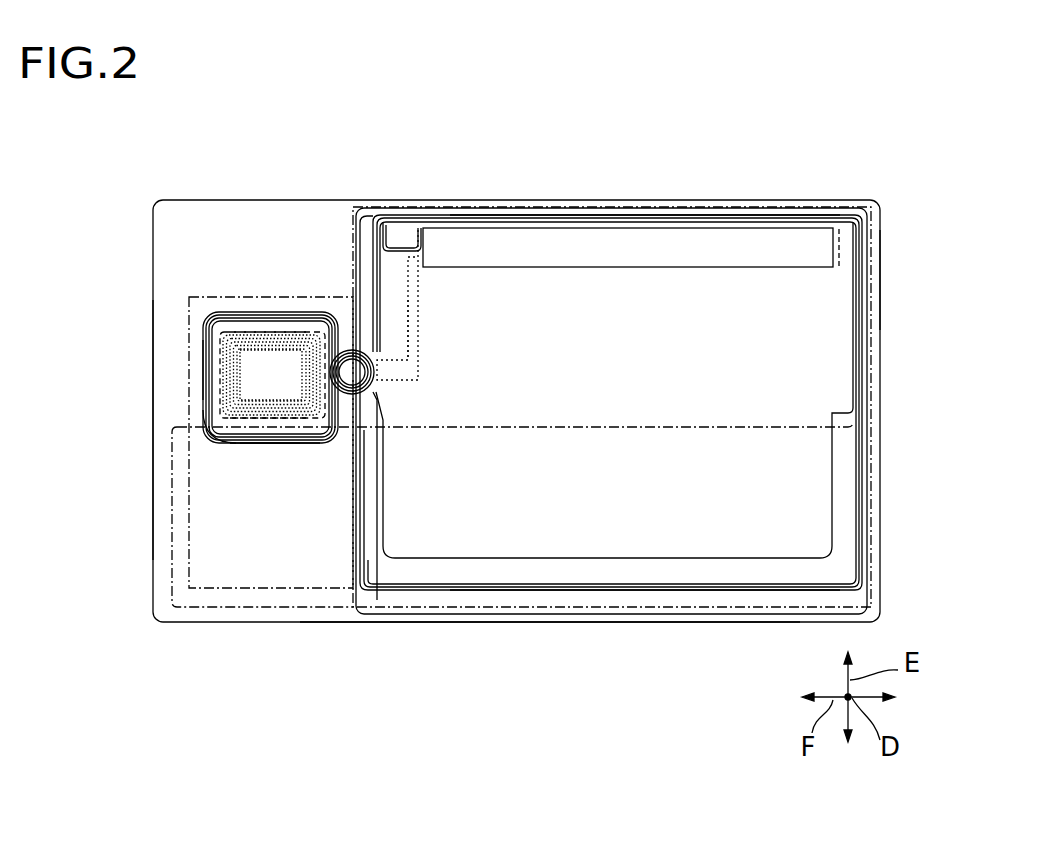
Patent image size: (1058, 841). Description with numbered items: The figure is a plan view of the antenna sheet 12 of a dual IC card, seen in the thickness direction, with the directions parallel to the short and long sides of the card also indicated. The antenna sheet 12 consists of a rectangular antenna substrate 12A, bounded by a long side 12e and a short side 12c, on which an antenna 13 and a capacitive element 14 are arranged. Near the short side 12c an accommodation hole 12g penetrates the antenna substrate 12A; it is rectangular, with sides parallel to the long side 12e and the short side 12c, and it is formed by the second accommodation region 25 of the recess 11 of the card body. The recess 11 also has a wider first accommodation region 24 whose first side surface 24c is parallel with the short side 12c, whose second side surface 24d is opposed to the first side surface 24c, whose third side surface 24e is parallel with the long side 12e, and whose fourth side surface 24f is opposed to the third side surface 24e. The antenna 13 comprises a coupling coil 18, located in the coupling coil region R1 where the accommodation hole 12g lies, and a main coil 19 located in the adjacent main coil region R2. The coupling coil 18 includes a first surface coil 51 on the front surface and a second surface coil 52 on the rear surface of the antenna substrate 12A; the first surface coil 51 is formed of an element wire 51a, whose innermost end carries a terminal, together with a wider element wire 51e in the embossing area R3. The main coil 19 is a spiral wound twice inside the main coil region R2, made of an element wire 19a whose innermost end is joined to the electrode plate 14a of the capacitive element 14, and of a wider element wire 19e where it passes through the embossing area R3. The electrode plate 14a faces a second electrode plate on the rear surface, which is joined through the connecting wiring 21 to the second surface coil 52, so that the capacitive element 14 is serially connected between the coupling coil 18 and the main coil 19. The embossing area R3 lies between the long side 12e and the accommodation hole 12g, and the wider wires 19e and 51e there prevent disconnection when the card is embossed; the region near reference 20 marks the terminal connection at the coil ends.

The recess 11 is at (203, 350).
The antenna sheet 12 is at (803, 197).
The antenna substrate 12A is at (881, 272).
The short side 12c is at (153, 430).
The long side 12e is at (577, 623).
The accommodation hole 12g is at (134, 450).
The second accommodation region 25 is at (236, 428).
The antenna 13 is at (327, 122).
The capacitive element 14 is at (570, 243).
The electrode plate 14a is at (614, 323).
The coupling coil 18 is at (315, 310).
The main coil 19 is at (432, 205).
The element wire 19a is at (660, 222).
The element wire 19e is at (720, 597).
The connecting portion 20 is at (377, 600).
The connecting wiring 21 is at (416, 333).
The first accommodation region 24 is at (300, 370).
The first side surface 24c is at (210, 399).
The second side surface 24d is at (420, 365).
The third side surface 24e is at (277, 443).
The fourth side surface 24f is at (292, 331).
The first surface coil 51 is at (218, 312).
The element wire 51a is at (253, 332).
The element wire 51e is at (303, 467).
The second surface coil 52 is at (166, 504).
The coupling coil region R1 is at (190, 372).
The main coil region R2 is at (873, 362).
The embossing area R3 is at (192, 608).